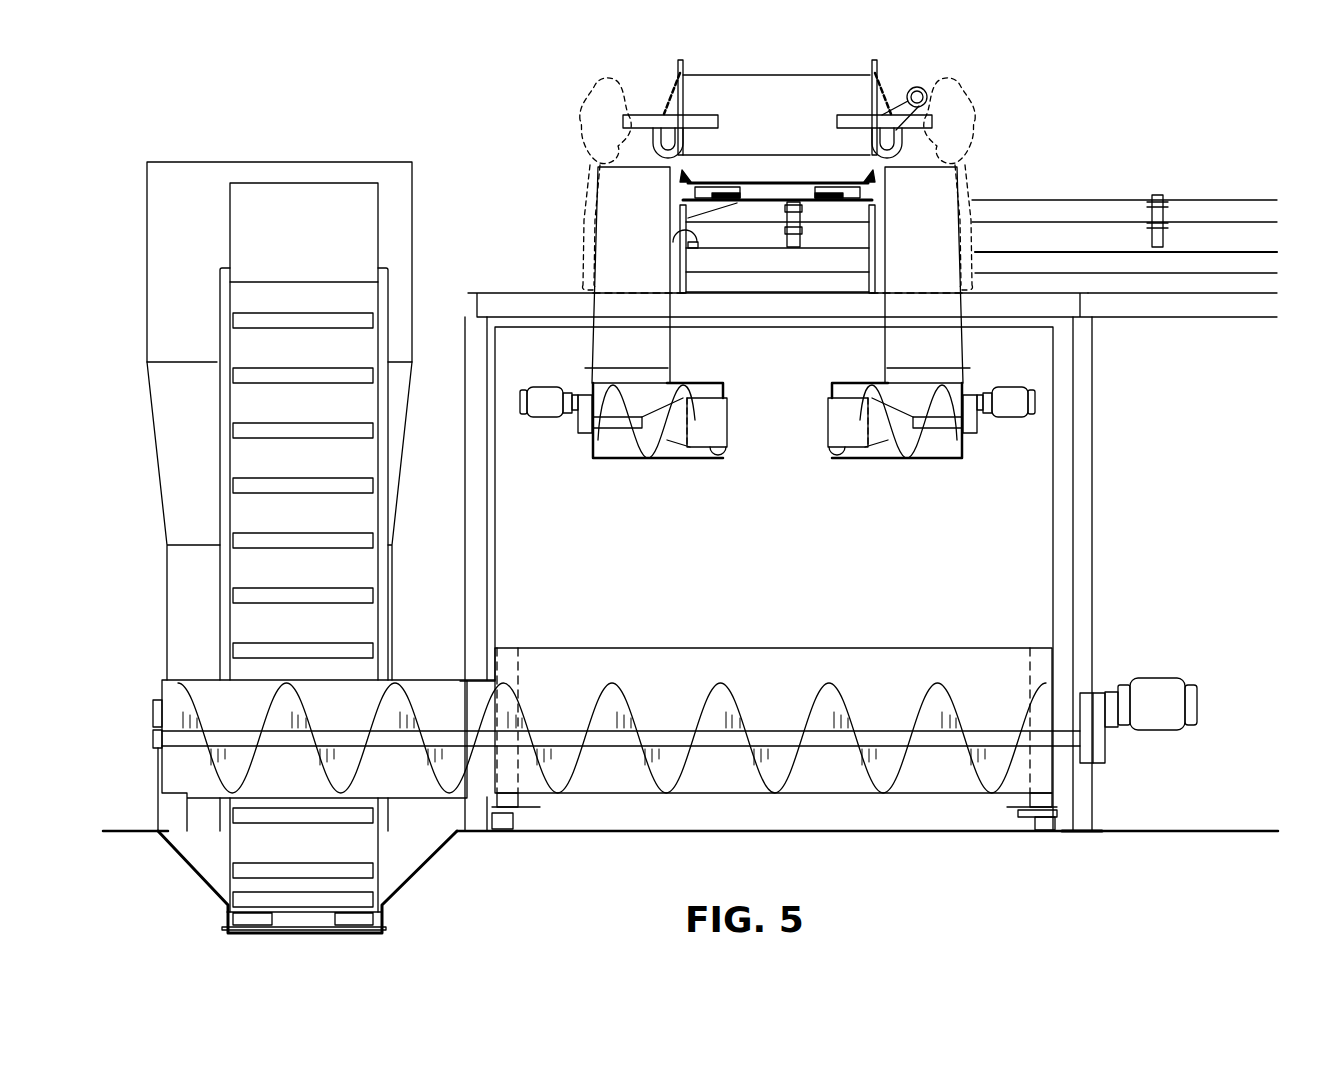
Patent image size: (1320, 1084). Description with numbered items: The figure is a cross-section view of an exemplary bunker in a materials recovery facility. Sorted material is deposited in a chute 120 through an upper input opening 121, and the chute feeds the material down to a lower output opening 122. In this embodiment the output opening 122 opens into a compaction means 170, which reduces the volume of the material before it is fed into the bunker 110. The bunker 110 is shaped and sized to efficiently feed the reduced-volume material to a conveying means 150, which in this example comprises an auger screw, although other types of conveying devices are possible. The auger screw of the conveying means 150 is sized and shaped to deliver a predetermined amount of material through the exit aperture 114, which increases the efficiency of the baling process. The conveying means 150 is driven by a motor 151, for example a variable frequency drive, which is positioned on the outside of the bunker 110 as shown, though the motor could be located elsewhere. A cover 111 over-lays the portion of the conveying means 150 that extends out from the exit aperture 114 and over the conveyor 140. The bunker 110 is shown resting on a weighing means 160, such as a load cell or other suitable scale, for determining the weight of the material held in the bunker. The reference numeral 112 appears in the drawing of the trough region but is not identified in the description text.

The bunker 110 is at (1124, 436).
The cover 111 is at (213, 680).
The second conveyor trough 112 is at (690, 680).
The exit aperture 114 is at (497, 667).
The chute 120 is at (640, 225).
The upper input opening 121 is at (922, 223).
The lower output opening 122 is at (915, 368).
The conveyor 140 is at (245, 465).
The conveying means 150 is at (880, 687).
The motor 151 is at (1157, 678).
The weighing means 160 is at (503, 818).
The compaction means 170 is at (878, 436).